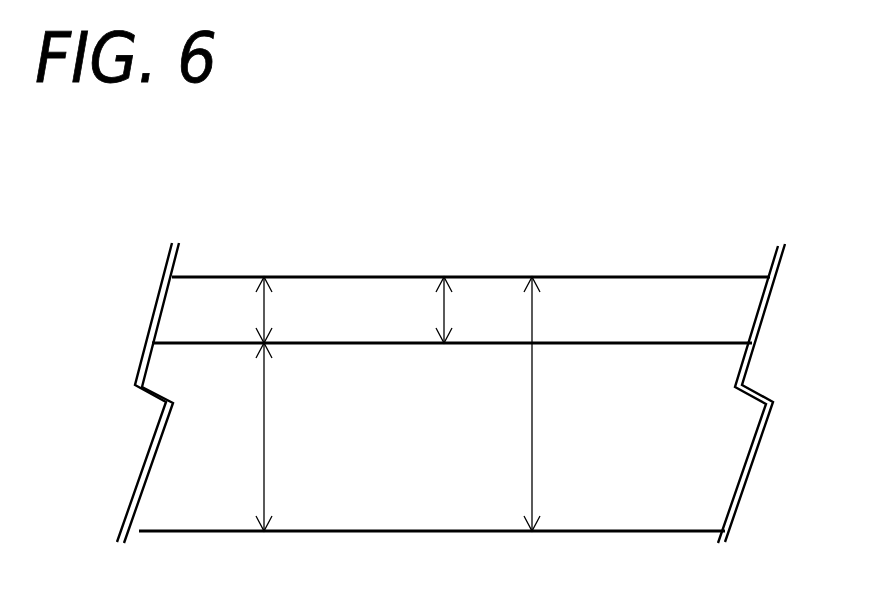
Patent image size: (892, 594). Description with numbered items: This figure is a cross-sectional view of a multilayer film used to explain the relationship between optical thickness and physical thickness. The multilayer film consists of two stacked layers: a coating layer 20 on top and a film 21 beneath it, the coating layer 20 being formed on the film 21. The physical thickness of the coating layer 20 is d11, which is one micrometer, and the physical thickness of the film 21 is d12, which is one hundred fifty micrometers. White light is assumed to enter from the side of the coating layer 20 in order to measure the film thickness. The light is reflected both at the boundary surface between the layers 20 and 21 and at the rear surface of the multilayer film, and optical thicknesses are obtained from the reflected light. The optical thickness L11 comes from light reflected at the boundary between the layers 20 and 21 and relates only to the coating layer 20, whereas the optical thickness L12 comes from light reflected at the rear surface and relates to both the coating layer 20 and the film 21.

The coating layer 20 is at (728, 308).
The film 21 is at (718, 422).
The physical thickness of layer 20 d11 is at (230, 310).
The physical thickness of layer 21 d12 is at (230, 437).
The optical thickness L11 is at (410, 310).
The optical thickness L12 is at (495, 404).